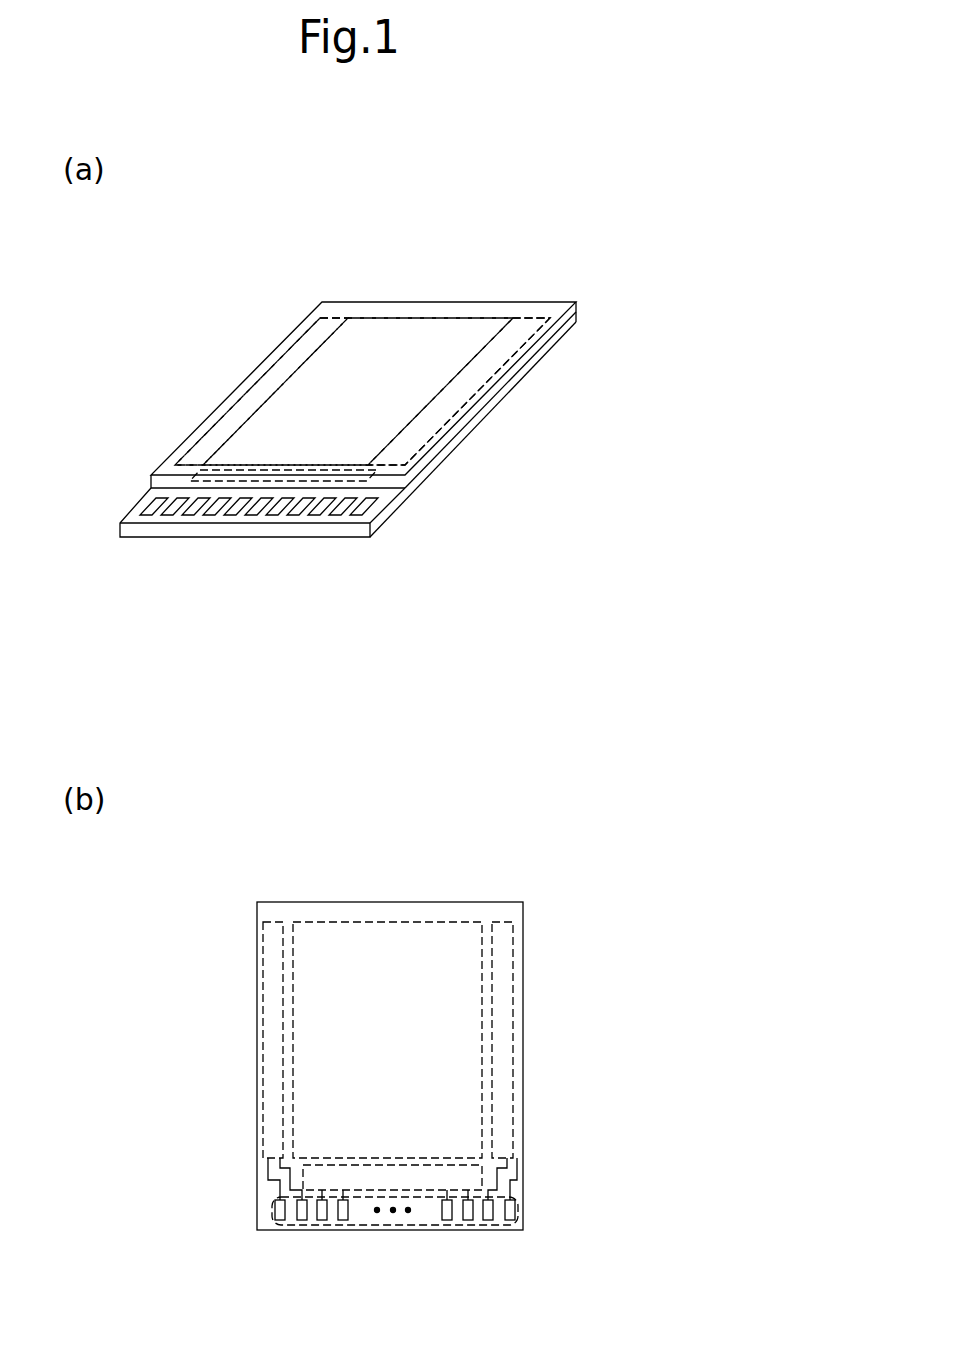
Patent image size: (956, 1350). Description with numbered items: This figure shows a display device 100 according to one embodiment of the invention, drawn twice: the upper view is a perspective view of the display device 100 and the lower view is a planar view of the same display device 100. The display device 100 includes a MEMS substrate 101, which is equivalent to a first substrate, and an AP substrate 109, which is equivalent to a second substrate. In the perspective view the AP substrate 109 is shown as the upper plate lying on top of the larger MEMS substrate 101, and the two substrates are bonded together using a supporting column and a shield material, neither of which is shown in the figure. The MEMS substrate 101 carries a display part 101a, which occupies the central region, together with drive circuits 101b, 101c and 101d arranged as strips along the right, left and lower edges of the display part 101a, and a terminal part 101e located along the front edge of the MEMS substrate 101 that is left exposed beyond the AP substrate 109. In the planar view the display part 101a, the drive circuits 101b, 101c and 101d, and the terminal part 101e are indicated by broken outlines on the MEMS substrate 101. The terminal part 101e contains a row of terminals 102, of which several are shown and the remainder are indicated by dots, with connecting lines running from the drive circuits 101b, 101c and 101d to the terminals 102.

The display device 100 is at (705, 200).
The MEMS substrate 101 is at (458, 442).
The AP substrate 109 is at (428, 313).
The display part 101a is at (430, 377).
The drive circuit 101b is at (523, 323).
The drive circuit 101c is at (238, 412).
The drive circuit 101d is at (353, 471).
The terminal part 101e is at (420, 495).
The terminal electrode 102 is at (140, 515).